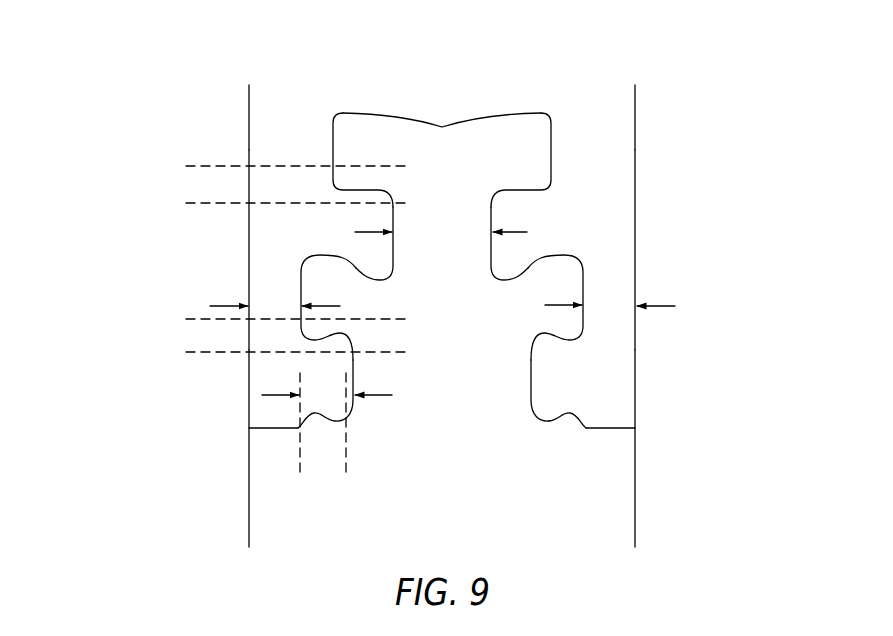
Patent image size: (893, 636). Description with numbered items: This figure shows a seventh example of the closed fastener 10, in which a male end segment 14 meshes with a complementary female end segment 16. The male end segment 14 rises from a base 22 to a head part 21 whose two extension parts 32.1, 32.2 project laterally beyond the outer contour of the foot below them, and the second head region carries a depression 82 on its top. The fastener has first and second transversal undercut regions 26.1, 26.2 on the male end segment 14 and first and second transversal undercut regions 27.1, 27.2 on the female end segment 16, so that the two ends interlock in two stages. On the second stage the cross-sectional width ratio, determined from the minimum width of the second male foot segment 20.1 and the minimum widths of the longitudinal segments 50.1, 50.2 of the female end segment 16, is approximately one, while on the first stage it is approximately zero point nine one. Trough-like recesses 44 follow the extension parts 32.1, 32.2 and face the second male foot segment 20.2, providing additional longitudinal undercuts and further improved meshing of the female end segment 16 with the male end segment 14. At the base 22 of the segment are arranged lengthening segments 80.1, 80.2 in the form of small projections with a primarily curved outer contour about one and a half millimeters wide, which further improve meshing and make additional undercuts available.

The fastener 10 is at (775, 82).
The male end segment 14 is at (671, 327).
The female end segment 16 is at (201, 287).
The head part 21 is at (535, 152).
The base 22 is at (614, 418).
The second male foot segment 20.1 is at (605, 425).
The second male foot segment 20.2 is at (482, 245).
The first transversal undercut region 26.1 is at (240, 335).
The second transversal undercut region 26.2 is at (242, 184).
The first transversal undercut region 27.1 is at (185, 166).
The second transversal undercut region 27.2 is at (185, 319).
The extension part 32.1 is at (375, 315).
The extension part 32.2 is at (521, 314).
The trough-like recess 44 is at (366, 275).
The longitudinal segment 50.1 is at (615, 177).
The longitudinal segment 50.2 is at (273, 227).
The lengthening segment 80.1 is at (318, 430).
The lengthening segment 80.2 is at (569, 430).
The depression 82 is at (439, 116).